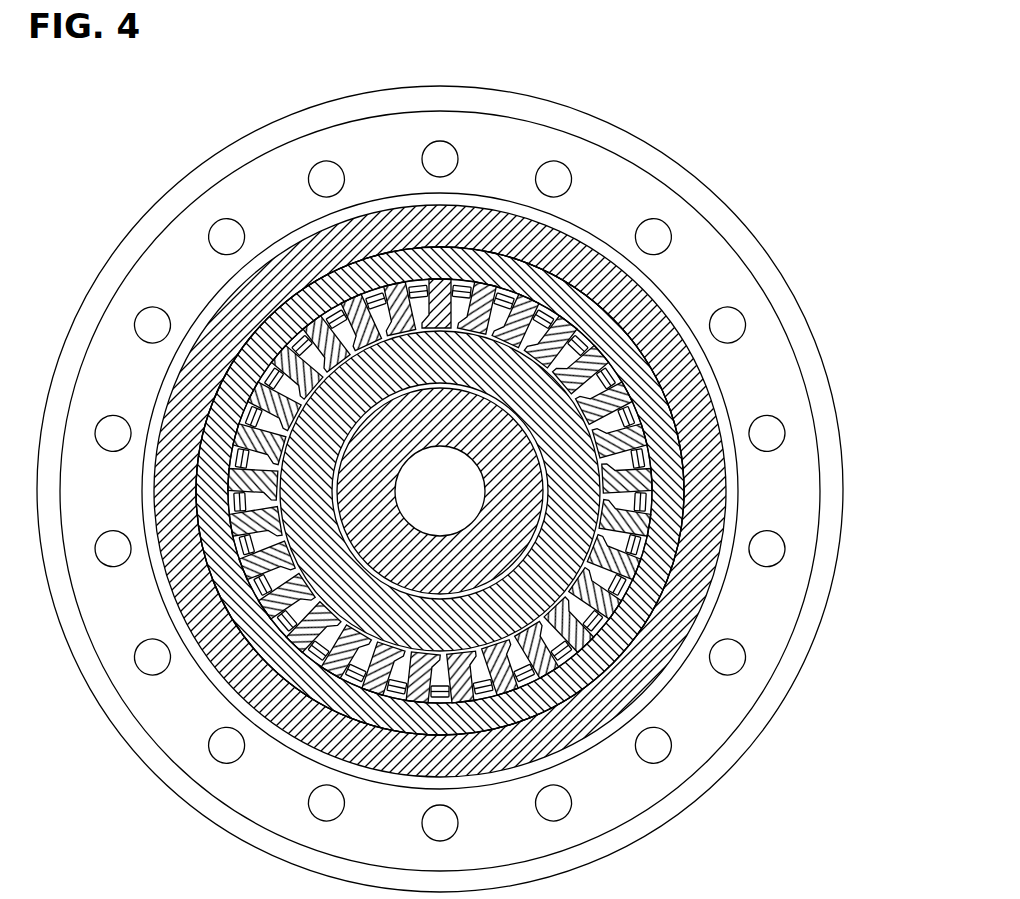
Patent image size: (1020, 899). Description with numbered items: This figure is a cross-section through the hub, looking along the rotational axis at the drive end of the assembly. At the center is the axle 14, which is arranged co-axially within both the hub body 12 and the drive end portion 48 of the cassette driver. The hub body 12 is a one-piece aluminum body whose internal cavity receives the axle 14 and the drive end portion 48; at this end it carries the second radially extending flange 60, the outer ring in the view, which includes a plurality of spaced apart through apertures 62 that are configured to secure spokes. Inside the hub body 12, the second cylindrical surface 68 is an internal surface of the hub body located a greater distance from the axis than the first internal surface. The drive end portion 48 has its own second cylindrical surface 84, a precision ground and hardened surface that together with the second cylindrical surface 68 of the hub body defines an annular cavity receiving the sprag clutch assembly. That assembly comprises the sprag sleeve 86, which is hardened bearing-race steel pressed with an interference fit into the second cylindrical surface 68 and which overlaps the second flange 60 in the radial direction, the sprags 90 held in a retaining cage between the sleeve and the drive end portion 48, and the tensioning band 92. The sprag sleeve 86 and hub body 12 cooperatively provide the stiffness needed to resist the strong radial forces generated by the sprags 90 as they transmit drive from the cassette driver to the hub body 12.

The hub body 12 is at (422, 242).
The axle 14 is at (423, 427).
The drive end portion 48 is at (422, 370).
The second radially extending flange 60 is at (717, 284).
The through apertures 62 is at (735, 343).
The second cylindrical surface 68 is at (662, 585).
The second cylindrical surface 84 is at (640, 535).
The sprag sleeve 86 is at (422, 277).
The sprags 90 is at (637, 472).
The tensioning band 92 is at (635, 511).